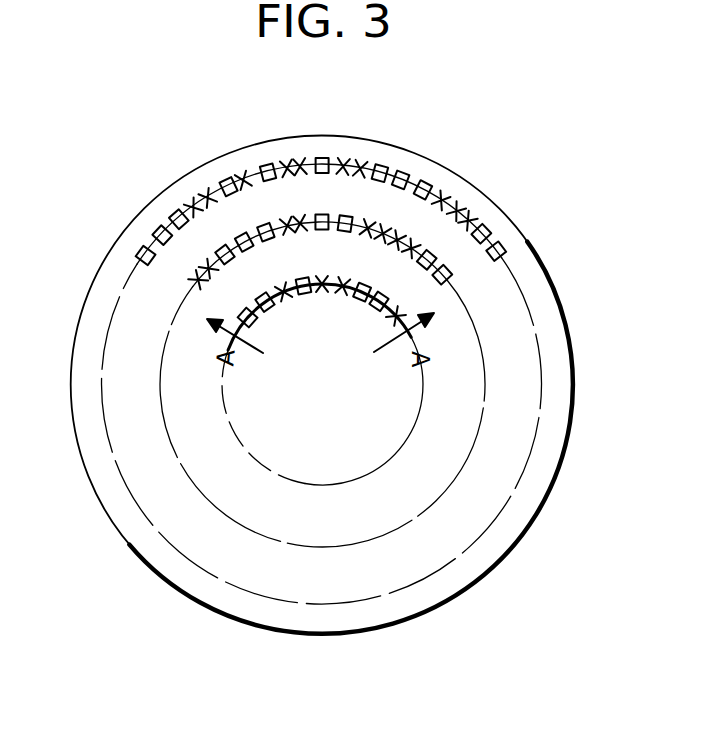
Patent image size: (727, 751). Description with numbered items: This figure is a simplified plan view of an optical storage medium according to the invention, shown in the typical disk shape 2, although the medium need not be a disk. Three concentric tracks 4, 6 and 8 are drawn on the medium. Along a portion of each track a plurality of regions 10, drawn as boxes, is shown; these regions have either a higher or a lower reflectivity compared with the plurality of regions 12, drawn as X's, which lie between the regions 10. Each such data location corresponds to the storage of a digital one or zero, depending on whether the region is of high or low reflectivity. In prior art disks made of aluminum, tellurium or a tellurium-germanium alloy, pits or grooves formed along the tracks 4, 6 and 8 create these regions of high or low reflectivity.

The disk shape 2 is at (557, 285).
The track 4 is at (540, 363).
The track 6 is at (483, 410).
The track 8 is at (390, 458).
The regions 10 is at (321, 159).
The regions 12 is at (349, 162).